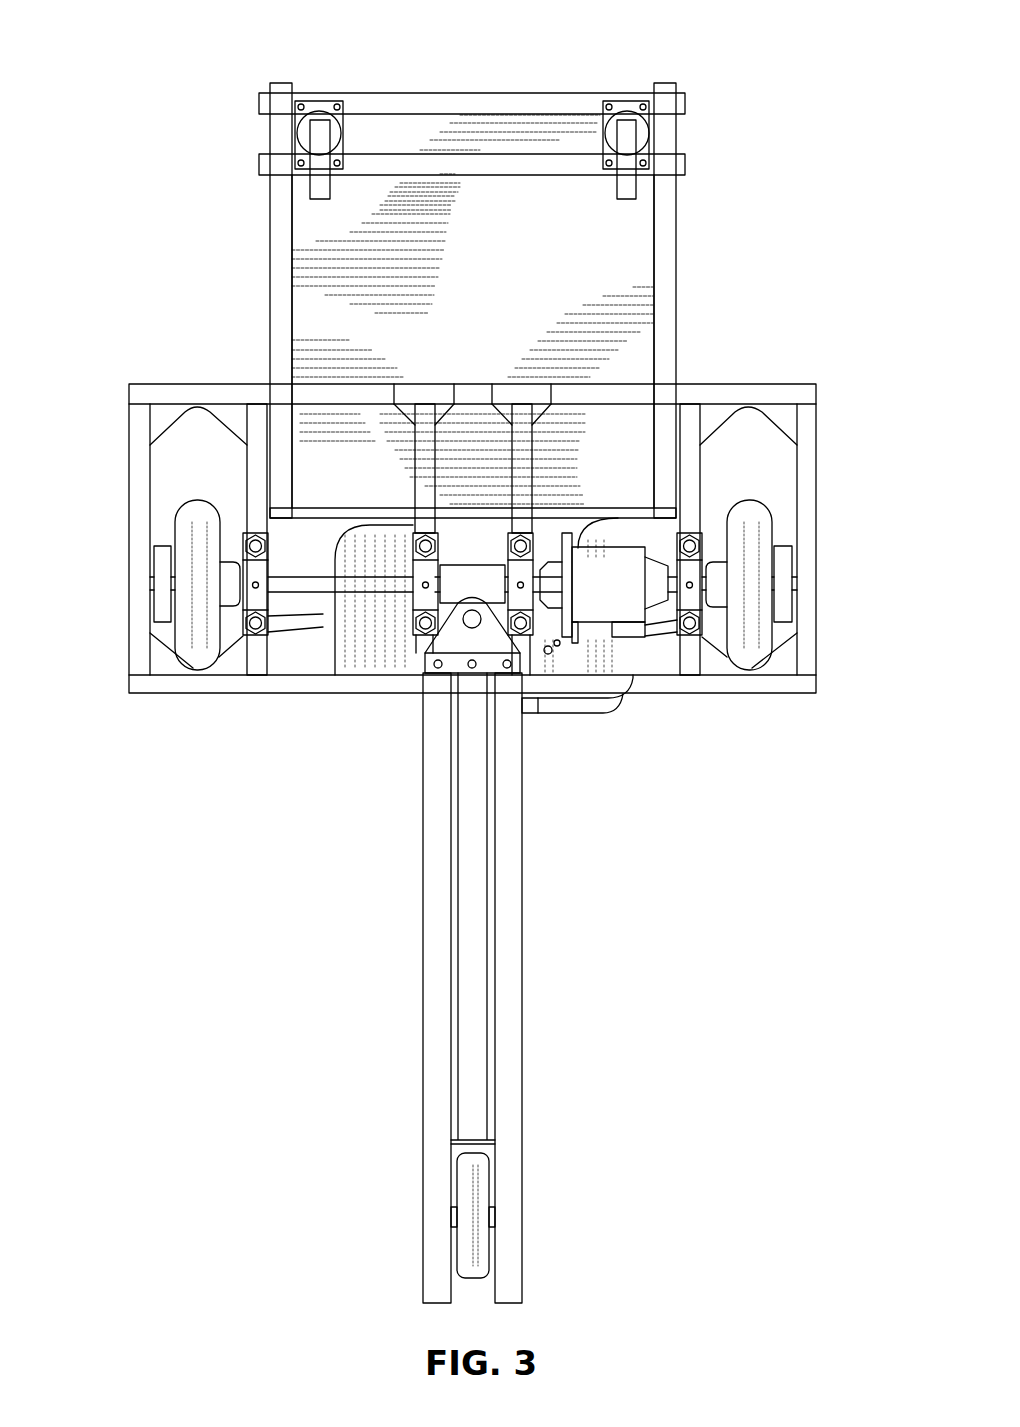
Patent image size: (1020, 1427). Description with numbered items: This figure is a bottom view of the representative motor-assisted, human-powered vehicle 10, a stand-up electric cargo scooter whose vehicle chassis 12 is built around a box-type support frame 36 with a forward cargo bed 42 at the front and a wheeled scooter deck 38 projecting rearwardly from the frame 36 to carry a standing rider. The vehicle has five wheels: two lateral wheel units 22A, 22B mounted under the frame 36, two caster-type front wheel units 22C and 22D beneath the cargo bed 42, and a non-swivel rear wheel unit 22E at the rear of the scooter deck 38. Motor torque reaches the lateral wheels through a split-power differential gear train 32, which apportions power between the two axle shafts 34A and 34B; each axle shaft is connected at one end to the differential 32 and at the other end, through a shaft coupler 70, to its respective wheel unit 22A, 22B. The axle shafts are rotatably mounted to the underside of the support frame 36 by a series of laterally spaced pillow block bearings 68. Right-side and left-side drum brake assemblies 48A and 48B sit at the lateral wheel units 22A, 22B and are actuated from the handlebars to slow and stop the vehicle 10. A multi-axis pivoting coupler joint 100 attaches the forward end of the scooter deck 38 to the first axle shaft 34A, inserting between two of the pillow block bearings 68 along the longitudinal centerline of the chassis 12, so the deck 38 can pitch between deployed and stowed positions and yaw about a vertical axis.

The motor-assisted, human-powered vehicle 10 is at (168, 97).
The vehicle chassis 12 is at (763, 322).
The lateral wheel unit 22A is at (180, 515).
The lateral wheel unit 22B is at (763, 515).
The caster-type front wheel unit 22C is at (316, 187).
The caster-type front wheel unit 22D is at (630, 187).
The rear wheel unit 22E is at (463, 1163).
The split-power differential gear train 32 is at (625, 585).
The axle shaft 34A is at (322, 583).
The axle shaft 34B is at (673, 587).
The box-type support frame 36 is at (815, 406).
The wheeled scooter deck 38 is at (523, 905).
The forward cargo bed 42 is at (628, 241).
The drum brake assembly 48A is at (163, 562).
The drum brake assembly 48B is at (783, 562).
The pillow block bearings 68 is at (262, 598).
The shaft coupler 70 is at (232, 570).
The multi-axis pivoting coupler joint 100 is at (453, 600).